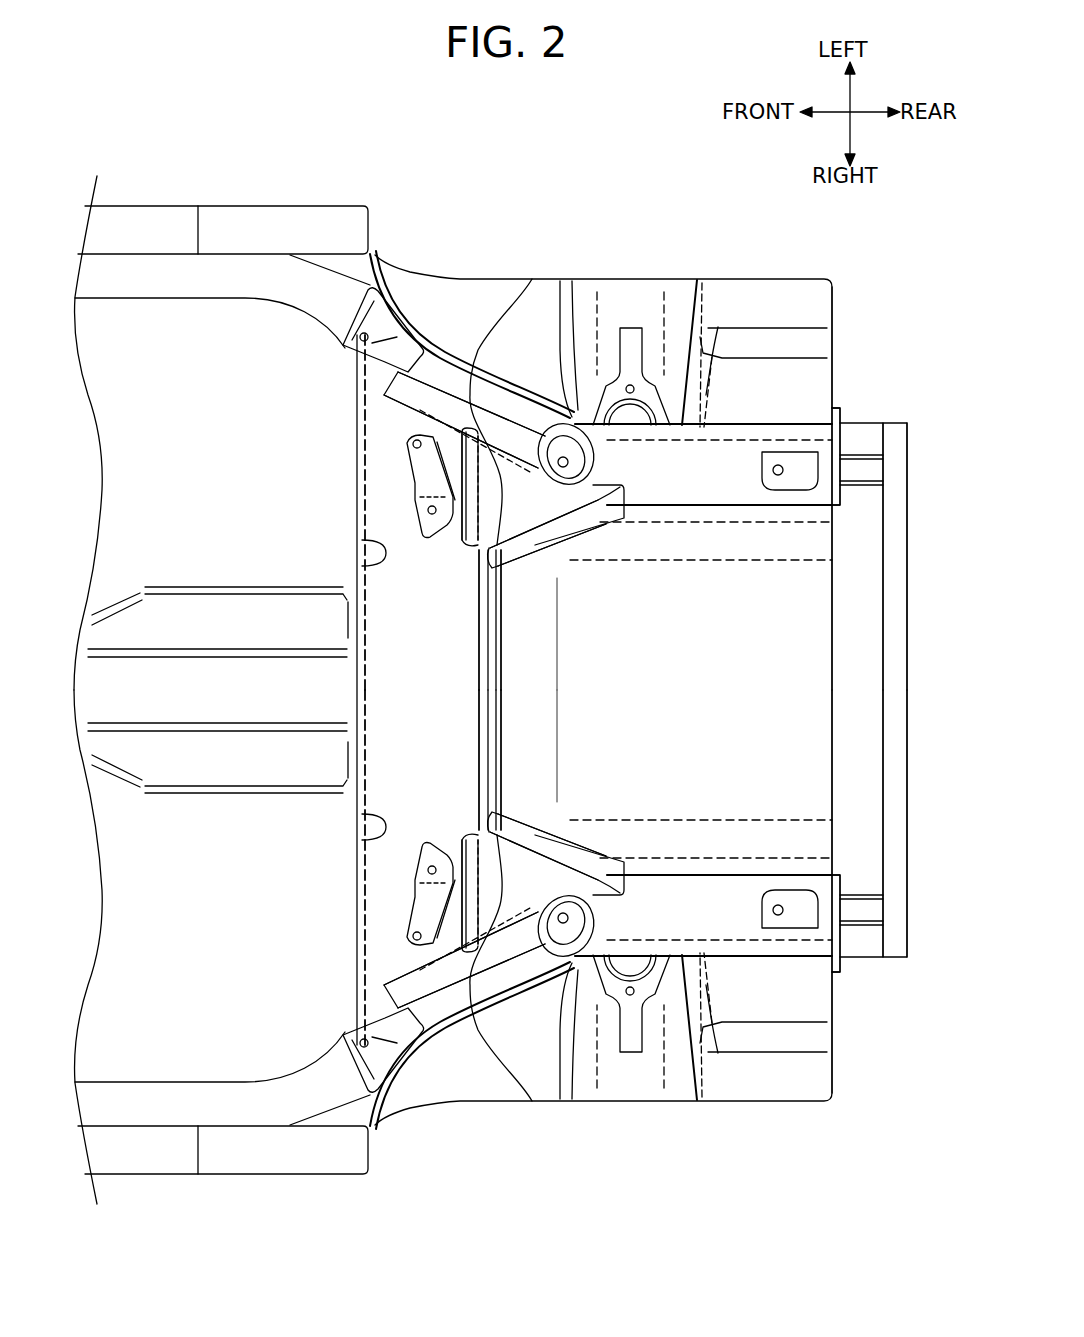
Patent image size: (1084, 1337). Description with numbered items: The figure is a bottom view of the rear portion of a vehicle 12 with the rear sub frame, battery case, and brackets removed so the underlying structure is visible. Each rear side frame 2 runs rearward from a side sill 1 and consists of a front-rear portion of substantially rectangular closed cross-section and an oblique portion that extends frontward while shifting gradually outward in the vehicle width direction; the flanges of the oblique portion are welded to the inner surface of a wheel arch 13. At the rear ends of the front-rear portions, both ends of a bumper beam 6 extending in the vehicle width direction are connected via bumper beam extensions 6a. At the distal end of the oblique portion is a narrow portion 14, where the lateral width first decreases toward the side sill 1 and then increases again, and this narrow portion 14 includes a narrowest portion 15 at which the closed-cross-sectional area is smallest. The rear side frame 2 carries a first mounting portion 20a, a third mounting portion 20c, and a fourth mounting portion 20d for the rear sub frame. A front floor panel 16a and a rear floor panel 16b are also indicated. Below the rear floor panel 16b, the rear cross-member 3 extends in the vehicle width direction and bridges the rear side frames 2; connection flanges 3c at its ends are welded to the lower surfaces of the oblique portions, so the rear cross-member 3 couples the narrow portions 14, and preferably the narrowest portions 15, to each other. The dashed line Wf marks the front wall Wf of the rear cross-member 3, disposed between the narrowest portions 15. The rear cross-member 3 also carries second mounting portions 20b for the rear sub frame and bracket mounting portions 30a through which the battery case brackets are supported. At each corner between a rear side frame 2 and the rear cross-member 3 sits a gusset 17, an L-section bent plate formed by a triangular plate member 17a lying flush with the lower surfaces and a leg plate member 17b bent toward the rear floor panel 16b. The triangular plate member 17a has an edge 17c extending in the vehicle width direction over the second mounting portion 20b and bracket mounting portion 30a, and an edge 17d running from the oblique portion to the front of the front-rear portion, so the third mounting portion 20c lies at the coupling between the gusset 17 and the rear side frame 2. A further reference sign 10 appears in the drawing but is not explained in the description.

The side sill 1 is at (170, 1166).
The vehicle 12 is at (342, 1167).
The wheel arch 13 is at (390, 1114).
The narrow portion 14 is at (428, 1084).
The rear side frame 2 is at (718, 1053).
The edge 17d is at (492, 998).
The first mounting portion 20a is at (359, 1042).
The narrowest portion 15 is at (346, 1022).
The connection flange 3c is at (436, 983).
The second mounting portion 20b is at (410, 936).
The third mounting portion 20c is at (568, 918).
The bracket mounting portion 30a is at (410, 832).
The edge 17c is at (456, 835).
The leg plate member 17b is at (531, 828).
The gusset 17 is at (560, 820).
The triangular plate member 17a is at (500, 768).
The fourth mounting portion 20d is at (776, 904).
The bumper beam extension 6a is at (862, 958).
The bumper beam 6 is at (908, 665).
The rear floor panel 16b is at (795, 778).
The front floor panel 16a is at (150, 910).
The rear cross-member 3 is at (375, 803).
The front wall Wf is at (360, 553).
The vehicle rear body structure 10 is at (492, 1105).